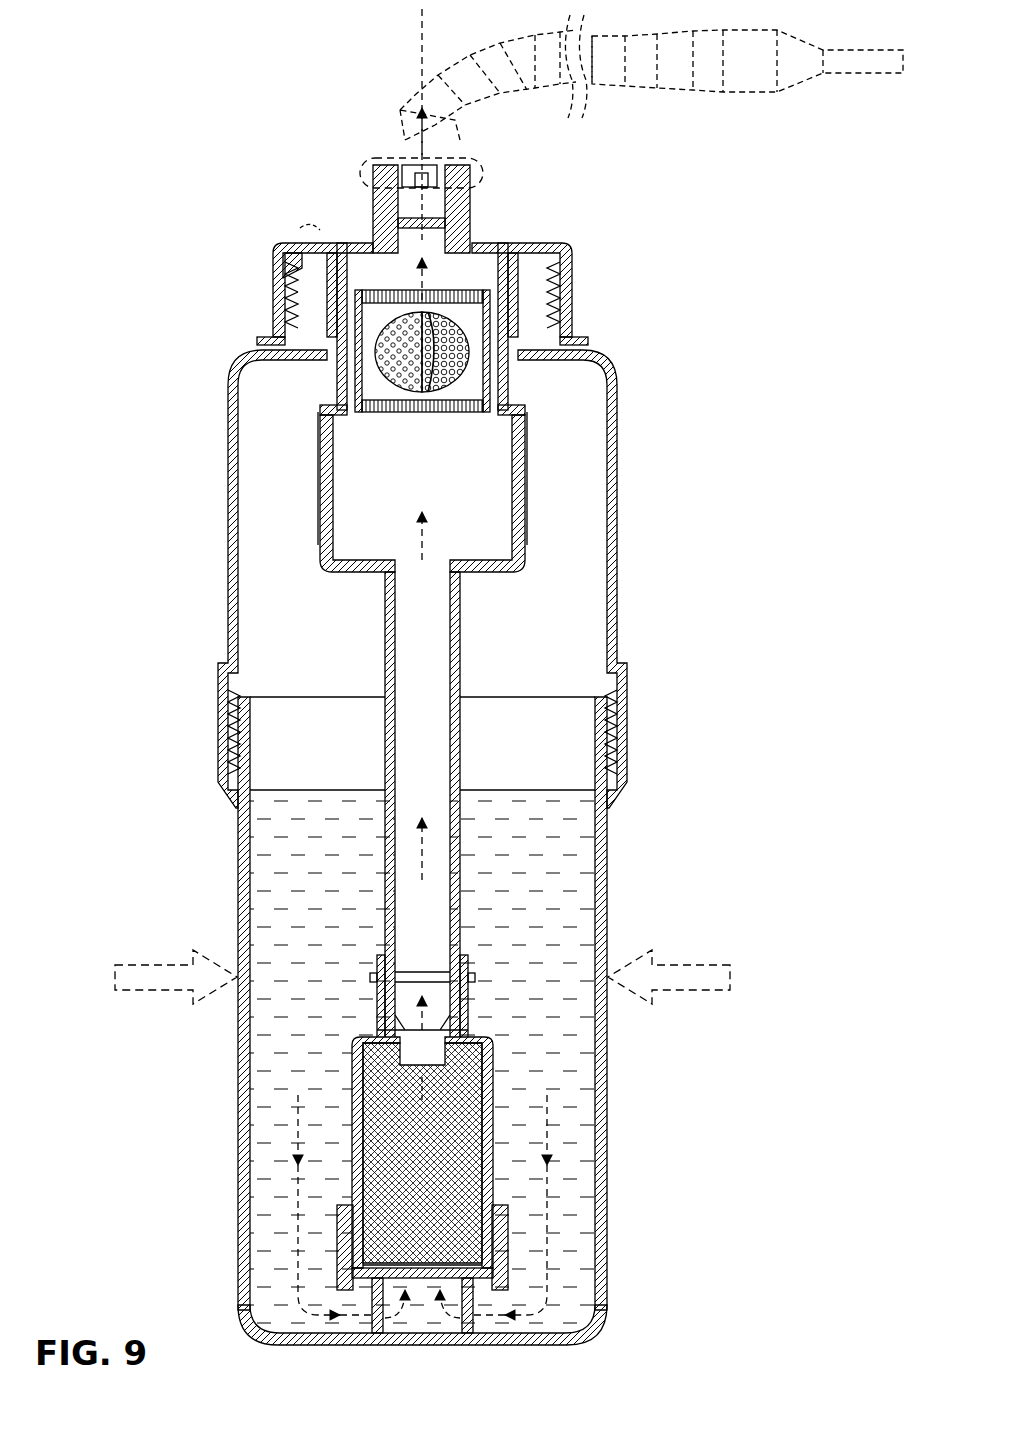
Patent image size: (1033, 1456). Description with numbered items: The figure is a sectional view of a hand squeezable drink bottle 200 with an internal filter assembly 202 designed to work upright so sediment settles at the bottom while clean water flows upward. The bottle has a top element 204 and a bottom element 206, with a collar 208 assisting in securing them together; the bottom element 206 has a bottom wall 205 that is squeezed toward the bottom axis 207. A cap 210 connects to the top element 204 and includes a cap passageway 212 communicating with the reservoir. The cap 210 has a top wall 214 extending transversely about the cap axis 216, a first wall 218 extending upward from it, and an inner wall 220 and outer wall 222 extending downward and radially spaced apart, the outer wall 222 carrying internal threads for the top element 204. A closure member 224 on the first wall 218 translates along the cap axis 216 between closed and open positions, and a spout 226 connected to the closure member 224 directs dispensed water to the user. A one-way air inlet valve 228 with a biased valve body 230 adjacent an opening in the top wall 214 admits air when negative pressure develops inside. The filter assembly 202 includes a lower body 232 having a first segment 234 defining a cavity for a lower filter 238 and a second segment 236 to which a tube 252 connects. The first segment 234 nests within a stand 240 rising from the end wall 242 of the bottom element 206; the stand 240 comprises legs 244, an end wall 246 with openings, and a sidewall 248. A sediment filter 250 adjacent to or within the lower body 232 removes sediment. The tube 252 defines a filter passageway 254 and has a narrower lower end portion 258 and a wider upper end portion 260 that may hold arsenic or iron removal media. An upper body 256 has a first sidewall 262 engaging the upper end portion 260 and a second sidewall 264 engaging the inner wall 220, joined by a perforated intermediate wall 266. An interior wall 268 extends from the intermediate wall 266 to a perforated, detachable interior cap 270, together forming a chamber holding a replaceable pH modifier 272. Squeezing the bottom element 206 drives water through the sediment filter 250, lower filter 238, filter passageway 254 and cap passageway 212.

The squeezable drink bottle 200 is at (160, 125).
The filter assembly 202 is at (480, 608).
The top element 204 is at (630, 500).
The bottom wall 205 is at (605, 915).
The bottom element 206 is at (610, 1142).
The bottom axis 207 is at (410, 22).
The collar 208 is at (628, 735).
The cap 210 is at (585, 253).
The cap passageway 212 is at (417, 160).
The top wall 214 is at (487, 247).
The cap axis 216 is at (410, 22).
The first wall 218 is at (475, 195).
The inner wall 220 is at (287, 280).
The outer wall 222 is at (292, 308).
The closure member 224 is at (385, 165).
The spout 226 is at (853, 75).
The one-way air inlet valve 228 is at (300, 228).
The valve body 230 is at (305, 270).
The lower body 232 is at (350, 1068).
The first segment 234 is at (352, 1122).
The second segment 236 is at (377, 968).
The lower filter 238 is at (468, 1090).
The stand 240 is at (513, 1280).
The end wall 242 is at (555, 1343).
The legs 244 is at (462, 1320).
The end wall 246 is at (337, 1313).
The sidewall 248 is at (340, 1232).
The sediment filter 250 is at (395, 1272).
The tube 252 is at (380, 722).
The filter passageway 254 is at (433, 667).
The upper body 256 is at (540, 403).
The lower end portion 258 is at (455, 877).
The upper end portion 260 is at (525, 462).
The first sidewall 262 is at (337, 482).
The second sidewall 264 is at (337, 380).
The intermediate wall 266 is at (355, 417).
The interior wall 268 is at (483, 358).
The interior cap 270 is at (440, 288).
The pH modifier 272 is at (262, 340).